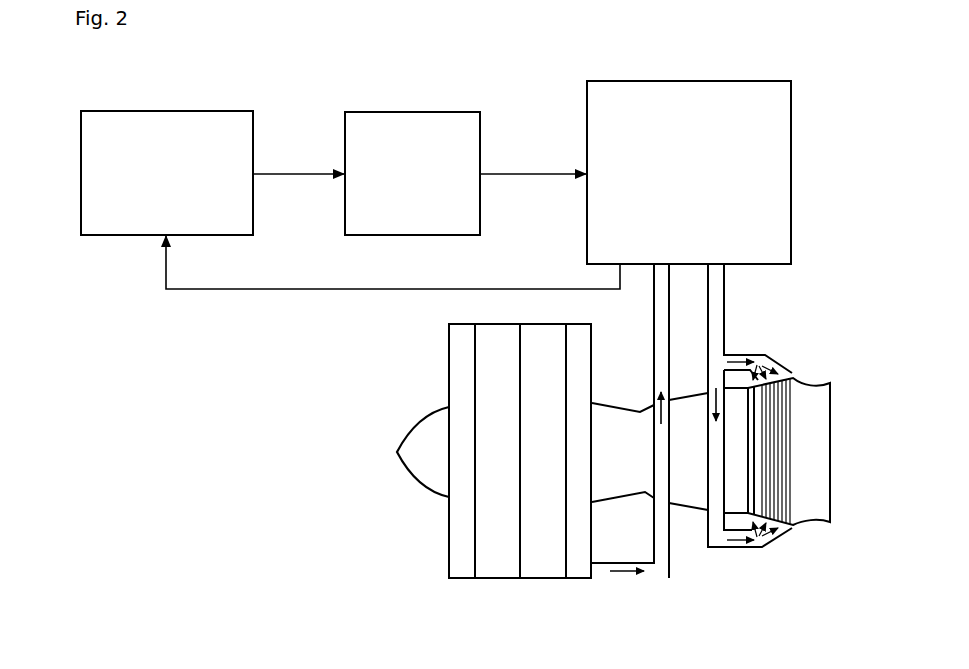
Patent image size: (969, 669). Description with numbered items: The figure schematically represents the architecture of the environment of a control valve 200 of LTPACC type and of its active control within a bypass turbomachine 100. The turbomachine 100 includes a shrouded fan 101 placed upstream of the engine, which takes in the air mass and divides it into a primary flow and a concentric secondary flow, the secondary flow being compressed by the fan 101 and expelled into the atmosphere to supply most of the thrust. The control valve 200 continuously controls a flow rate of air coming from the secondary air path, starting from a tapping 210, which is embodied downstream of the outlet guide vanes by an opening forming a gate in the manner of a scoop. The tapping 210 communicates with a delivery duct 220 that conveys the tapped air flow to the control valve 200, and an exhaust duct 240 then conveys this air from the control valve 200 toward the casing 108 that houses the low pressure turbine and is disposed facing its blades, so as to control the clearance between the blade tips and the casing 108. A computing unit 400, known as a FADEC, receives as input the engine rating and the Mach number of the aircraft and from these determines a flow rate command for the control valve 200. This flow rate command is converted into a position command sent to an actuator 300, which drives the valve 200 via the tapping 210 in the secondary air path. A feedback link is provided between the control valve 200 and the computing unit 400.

The bypass turbomachine 100 is at (333, 468).
The shrouded fan 101 is at (440, 514).
The casing 108 is at (768, 448).
The control valve 200 is at (699, 186).
The tapping 210 is at (605, 578).
The delivery duct 220 is at (662, 472).
The exhaust duct 240 is at (718, 306).
The actuator 300 is at (428, 186).
The computing unit 400 is at (83, 186).